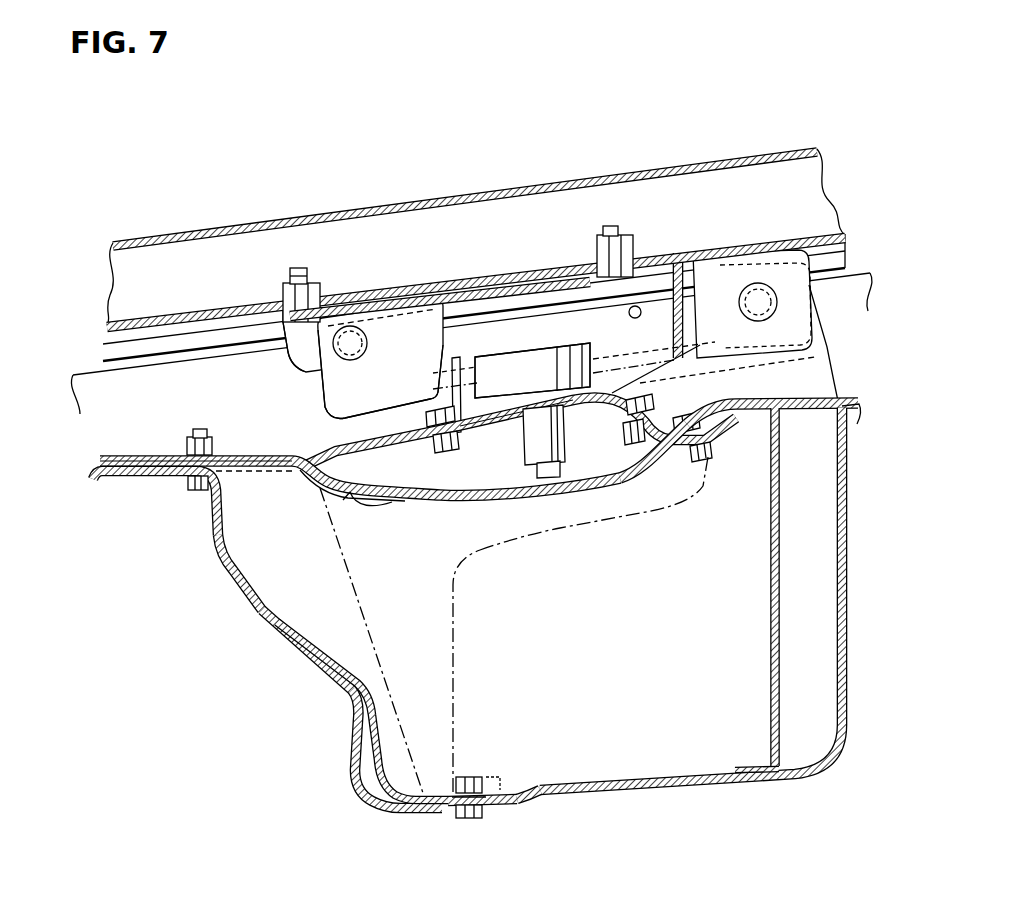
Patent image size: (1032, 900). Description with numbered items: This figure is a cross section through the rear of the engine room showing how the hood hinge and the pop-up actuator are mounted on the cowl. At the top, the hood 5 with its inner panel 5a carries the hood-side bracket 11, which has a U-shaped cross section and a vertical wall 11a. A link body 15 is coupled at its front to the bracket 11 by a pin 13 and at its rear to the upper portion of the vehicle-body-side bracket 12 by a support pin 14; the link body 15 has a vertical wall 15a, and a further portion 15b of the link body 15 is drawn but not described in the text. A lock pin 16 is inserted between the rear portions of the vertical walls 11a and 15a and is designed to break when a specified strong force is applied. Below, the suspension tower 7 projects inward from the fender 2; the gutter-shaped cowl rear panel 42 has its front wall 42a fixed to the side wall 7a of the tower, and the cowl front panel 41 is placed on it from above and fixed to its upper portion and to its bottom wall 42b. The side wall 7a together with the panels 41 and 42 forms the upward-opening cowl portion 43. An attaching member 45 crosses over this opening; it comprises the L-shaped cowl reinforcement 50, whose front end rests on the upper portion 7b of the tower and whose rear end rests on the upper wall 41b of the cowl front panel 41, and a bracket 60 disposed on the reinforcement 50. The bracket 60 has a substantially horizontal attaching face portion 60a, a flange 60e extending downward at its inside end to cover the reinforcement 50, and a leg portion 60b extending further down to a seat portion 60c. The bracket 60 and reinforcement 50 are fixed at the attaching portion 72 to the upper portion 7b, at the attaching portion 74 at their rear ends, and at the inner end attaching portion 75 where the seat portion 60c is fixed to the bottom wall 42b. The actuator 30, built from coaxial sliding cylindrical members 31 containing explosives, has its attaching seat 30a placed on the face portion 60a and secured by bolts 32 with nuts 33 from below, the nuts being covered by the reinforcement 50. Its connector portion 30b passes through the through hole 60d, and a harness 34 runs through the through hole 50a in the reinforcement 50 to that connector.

The fender 2 is at (80, 368).
The hood 5 is at (740, 152).
The inner panel 5a is at (753, 237).
The suspension tower 7 is at (222, 570).
The side wall 7a is at (292, 647).
The upper portion 7b is at (147, 472).
The hood-side bracket 11 is at (290, 371).
The vertical wall 11a is at (293, 357).
The vehicle-body-side bracket 12 is at (837, 377).
The pin 13 is at (337, 357).
The support pin 14 is at (770, 307).
The link body 15 is at (403, 367).
The vertical wall 15a is at (335, 410).
The upper flange of bracket plate 15b is at (477, 298).
The lock pin 16 is at (640, 306).
The actuator 30 is at (578, 340).
The attaching seat 30a is at (455, 370).
The connector portion 30b is at (567, 441).
The cylindrical members 31 is at (540, 357).
The bolts 32 is at (425, 421).
The nuts 33 is at (428, 446).
The harness 34 is at (383, 502).
The cowl front panel 41 is at (771, 630).
The upper wall 41b is at (827, 412).
The cowl rear panel 42 is at (845, 628).
The front wall 42a is at (307, 642).
The bottom wall 42b is at (563, 797).
The cowl portion 43 is at (686, 798).
The attaching member 45 is at (645, 490).
The cowl reinforcement 50 is at (114, 450).
The through hole 50a is at (325, 482).
The bracket 60 is at (150, 448).
The attaching face portion 60a is at (350, 492).
The leg portion 60b is at (454, 662).
The seat portion 60c is at (495, 789).
The through hole 60d is at (517, 424).
The flange 60e is at (597, 528).
The attaching portion 72 is at (190, 426).
The attaching portion 74 is at (704, 411).
The inner end attaching portion 75 is at (489, 763).